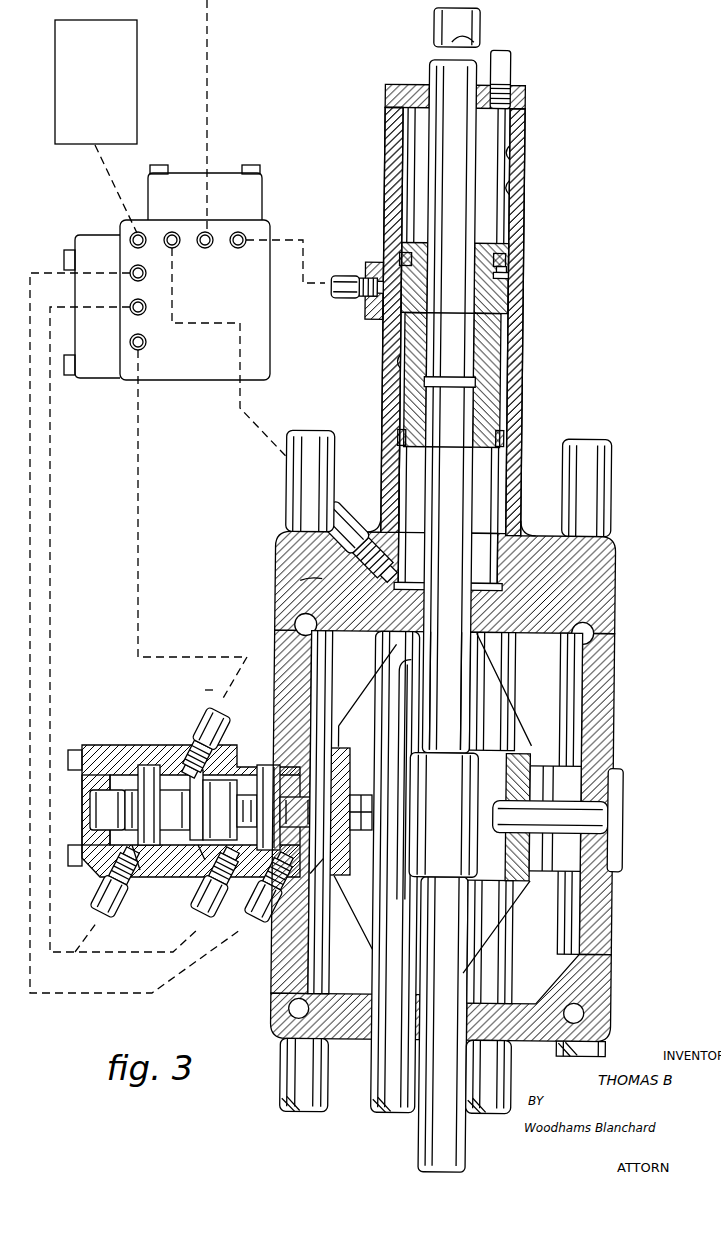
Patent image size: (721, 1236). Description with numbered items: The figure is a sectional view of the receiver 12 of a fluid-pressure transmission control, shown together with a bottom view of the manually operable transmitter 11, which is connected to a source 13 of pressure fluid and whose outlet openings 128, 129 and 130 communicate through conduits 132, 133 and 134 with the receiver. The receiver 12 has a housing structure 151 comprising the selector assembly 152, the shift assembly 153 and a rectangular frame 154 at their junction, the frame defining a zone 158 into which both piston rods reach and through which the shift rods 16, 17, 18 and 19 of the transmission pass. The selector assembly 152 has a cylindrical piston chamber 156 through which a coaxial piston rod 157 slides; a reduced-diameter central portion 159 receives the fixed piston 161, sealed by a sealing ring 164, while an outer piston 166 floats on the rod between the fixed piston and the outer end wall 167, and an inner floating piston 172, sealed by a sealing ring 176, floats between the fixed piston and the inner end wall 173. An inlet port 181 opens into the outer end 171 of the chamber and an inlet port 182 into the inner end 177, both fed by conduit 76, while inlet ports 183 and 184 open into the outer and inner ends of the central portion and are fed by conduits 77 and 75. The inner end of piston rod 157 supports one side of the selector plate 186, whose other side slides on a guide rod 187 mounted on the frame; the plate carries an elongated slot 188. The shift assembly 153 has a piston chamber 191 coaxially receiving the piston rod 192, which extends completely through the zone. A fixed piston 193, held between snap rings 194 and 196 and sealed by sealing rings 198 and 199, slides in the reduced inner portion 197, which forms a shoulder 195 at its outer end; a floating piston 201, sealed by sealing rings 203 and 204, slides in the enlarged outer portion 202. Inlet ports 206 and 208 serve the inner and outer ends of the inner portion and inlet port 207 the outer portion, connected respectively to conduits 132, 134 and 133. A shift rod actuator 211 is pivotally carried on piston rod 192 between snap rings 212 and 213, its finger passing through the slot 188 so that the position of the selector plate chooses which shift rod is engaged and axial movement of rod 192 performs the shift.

The transmitter 11 is at (270, 220).
The receiver 12 is at (622, 560).
The source of pressure fluid 13 is at (127, 40).
The shift rod 16 is at (290, 1095).
The shift rod 17 is at (385, 1100).
The shift rod 18 is at (505, 1080).
The shift rod 19 is at (600, 1040).
The conduit 75 is at (205, 915).
The conduit 76 is at (103, 898).
The conduit 77 is at (207, 700).
The outlet opening 128 is at (175, 247).
The outlet opening 129 is at (207, 248).
The outlet opening 130 is at (240, 248).
The conduit 132 is at (343, 505).
The conduit 133 is at (500, 58).
The conduit 134 is at (340, 278).
The housing structure 151 is at (524, 455).
The selector assembly 152 is at (140, 913).
The shift assembly 153 is at (524, 215).
The rectangular frame 154 is at (295, 947).
The piston chamber 156 is at (236, 742).
The piston rod 157 is at (242, 777).
The zone 158 is at (347, 962).
The central portion 159 is at (226, 700).
The fixed piston 161 is at (168, 788).
The sealing ring 164 is at (262, 782).
The outer piston 166 is at (130, 840).
The outer end wall 167 is at (105, 790).
The outer end 171 is at (140, 768).
The inner floating piston 172 is at (340, 778).
The inner end wall 173 is at (325, 860).
The sealing ring 176 is at (240, 760).
The inner end 177 is at (322, 757).
The inlet port 181 is at (140, 870).
The inlet port 182 is at (340, 890).
The inlet port 183 is at (208, 730).
The inlet port 184 is at (205, 860).
The selector plate 186 is at (518, 742).
The guide rod 187 is at (535, 808).
The elongated slot 188 is at (404, 688).
The piston chamber 191 is at (512, 150).
The piston rod 192 is at (440, 135).
The fixed piston 193 is at (492, 352).
The snap ring 194 is at (477, 312).
The shoulder 195 is at (510, 275).
The snap ring 196 is at (478, 447).
The inner portion 197 is at (398, 368).
The sealing ring 198 is at (502, 440).
The sealing ring 199 is at (449, 392).
The floating piston 201 is at (508, 268).
The outer portion 202 is at (512, 185).
The sealing ring 203 is at (512, 258).
The sealing ring 204 is at (454, 277).
The inlet port 206 is at (300, 582).
The inlet port 207 is at (505, 90).
The inlet port 208 is at (382, 318).
The shift rod actuator 211 is at (475, 760).
The snap ring 212 is at (430, 748).
The snap ring 213 is at (430, 880).